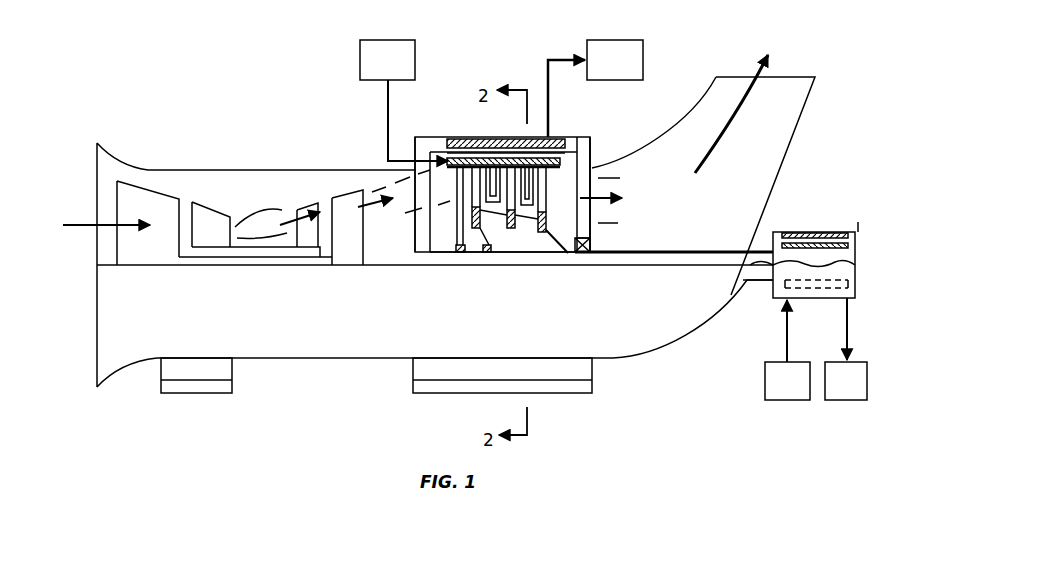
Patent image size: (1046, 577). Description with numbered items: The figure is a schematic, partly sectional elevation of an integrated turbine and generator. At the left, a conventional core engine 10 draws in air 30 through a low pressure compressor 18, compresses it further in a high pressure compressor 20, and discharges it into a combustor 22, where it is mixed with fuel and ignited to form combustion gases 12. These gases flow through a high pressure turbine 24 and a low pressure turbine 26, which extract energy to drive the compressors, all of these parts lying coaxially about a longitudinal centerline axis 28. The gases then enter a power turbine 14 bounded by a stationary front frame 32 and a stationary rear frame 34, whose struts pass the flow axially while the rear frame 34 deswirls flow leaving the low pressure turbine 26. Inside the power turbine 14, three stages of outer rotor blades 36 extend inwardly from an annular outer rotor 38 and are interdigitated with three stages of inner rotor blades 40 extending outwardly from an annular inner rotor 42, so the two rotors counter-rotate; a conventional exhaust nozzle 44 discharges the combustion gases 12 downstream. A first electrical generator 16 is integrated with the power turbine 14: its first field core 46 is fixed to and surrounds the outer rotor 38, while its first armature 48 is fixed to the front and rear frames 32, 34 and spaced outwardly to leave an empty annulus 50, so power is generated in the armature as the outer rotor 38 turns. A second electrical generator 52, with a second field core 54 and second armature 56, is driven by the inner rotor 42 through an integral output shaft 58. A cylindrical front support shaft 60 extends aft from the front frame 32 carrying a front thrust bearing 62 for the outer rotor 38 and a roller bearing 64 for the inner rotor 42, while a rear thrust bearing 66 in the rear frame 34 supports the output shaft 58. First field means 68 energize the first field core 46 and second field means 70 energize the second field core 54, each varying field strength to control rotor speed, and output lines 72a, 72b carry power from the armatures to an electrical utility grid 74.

The core engine 10 is at (178, 166).
The combustion gases 12 is at (288, 214).
The power turbine 14 is at (528, 274).
The first electrical generator 16 is at (475, 136).
The low pressure compressor 18 is at (153, 190).
The high pressure compressor 20 is at (210, 203).
The combustor 22 is at (253, 220).
The high pressure turbine 24 is at (310, 207).
The low pressure turbine 26 is at (342, 195).
The centerline axis 28 is at (313, 268).
The air 30 is at (82, 222).
The front frame 32 is at (398, 177).
The rear frame 34 is at (603, 183).
The outer rotor blades 36 is at (456, 192).
The outer rotor 38 is at (577, 138).
The inner rotor blades 40 is at (588, 209).
The inner rotor 42 is at (528, 222).
The exhaust nozzle 44 is at (803, 140).
The first field core 46 is at (572, 139).
The first armature 48 is at (537, 137).
The empty annulus 50 is at (447, 137).
The second electrical generator 52 is at (858, 222).
The second field core 54 is at (855, 247).
The second armature 56 is at (812, 232).
The output shaft 58 is at (731, 250).
The front support shaft 60 is at (425, 267).
The front thrust bearing 62 is at (450, 267).
The roller bearing 64 is at (503, 267).
The rear thrust bearing 66 is at (592, 245).
The first field means 68 is at (404, 100).
The second field means 70 is at (787, 350).
The electrical output line 72a is at (560, 57).
The electrical output line 72b is at (847, 330).
The electrical utility grid 74 is at (727, 220).